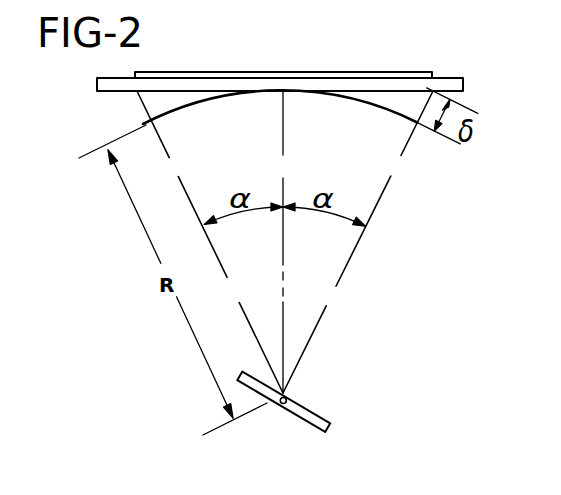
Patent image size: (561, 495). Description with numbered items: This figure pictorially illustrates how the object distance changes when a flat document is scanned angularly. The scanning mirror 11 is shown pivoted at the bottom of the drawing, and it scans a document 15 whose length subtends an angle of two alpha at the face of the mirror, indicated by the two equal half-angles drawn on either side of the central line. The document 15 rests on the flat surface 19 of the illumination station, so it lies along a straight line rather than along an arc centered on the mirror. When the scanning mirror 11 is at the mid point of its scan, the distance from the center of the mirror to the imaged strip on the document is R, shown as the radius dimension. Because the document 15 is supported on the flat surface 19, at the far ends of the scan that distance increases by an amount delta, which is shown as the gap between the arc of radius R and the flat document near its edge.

The scanning mirror 11 is at (313, 410).
The document 15 is at (372, 73).
The flat surface 19 is at (443, 77).